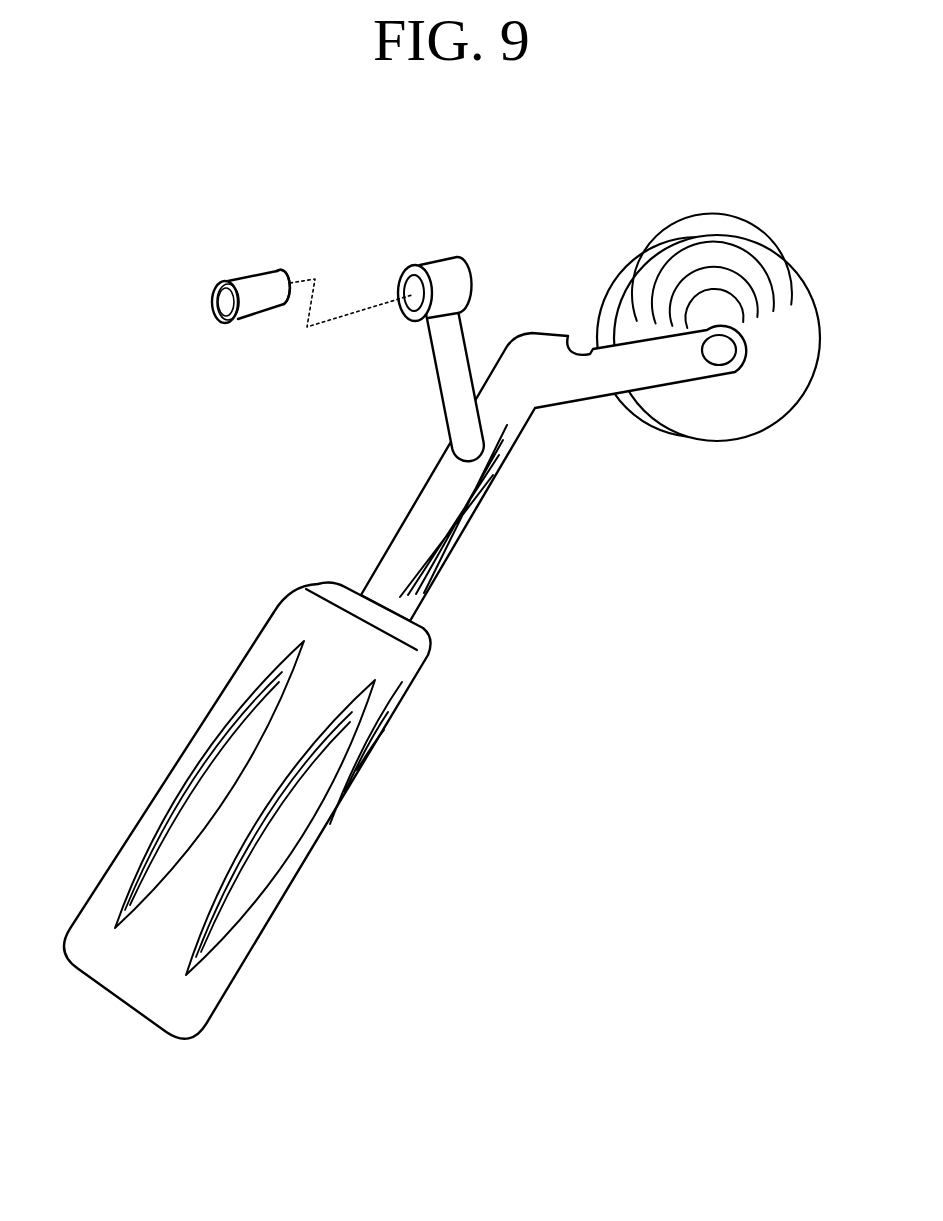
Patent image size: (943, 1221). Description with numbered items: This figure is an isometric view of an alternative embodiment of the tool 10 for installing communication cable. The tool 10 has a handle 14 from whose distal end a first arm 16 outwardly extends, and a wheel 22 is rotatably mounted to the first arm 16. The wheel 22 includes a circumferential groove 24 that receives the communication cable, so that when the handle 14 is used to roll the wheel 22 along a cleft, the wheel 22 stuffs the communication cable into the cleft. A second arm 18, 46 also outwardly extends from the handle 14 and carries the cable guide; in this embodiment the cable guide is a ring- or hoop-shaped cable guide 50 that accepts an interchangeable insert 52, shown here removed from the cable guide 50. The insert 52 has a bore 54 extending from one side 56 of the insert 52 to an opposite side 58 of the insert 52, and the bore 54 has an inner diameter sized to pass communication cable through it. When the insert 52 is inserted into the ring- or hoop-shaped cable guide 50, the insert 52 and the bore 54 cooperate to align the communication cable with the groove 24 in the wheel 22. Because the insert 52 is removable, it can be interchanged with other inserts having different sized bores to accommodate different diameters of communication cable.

The tool 10 is at (143, 188).
The handle 14 is at (380, 553).
The first arm 16 is at (553, 330).
The second arm 18 is at (404, 385).
The post shaft 46 is at (433, 351).
The wheel 22 is at (708, 306).
The circumferential groove 24 is at (668, 262).
The ring- or hoop-shaped cable guide 50 is at (430, 260).
The insert 52 is at (217, 296).
The bore 54 is at (222, 303).
The one side of the insert 56 is at (217, 289).
The opposite side of the insert 58 is at (287, 273).